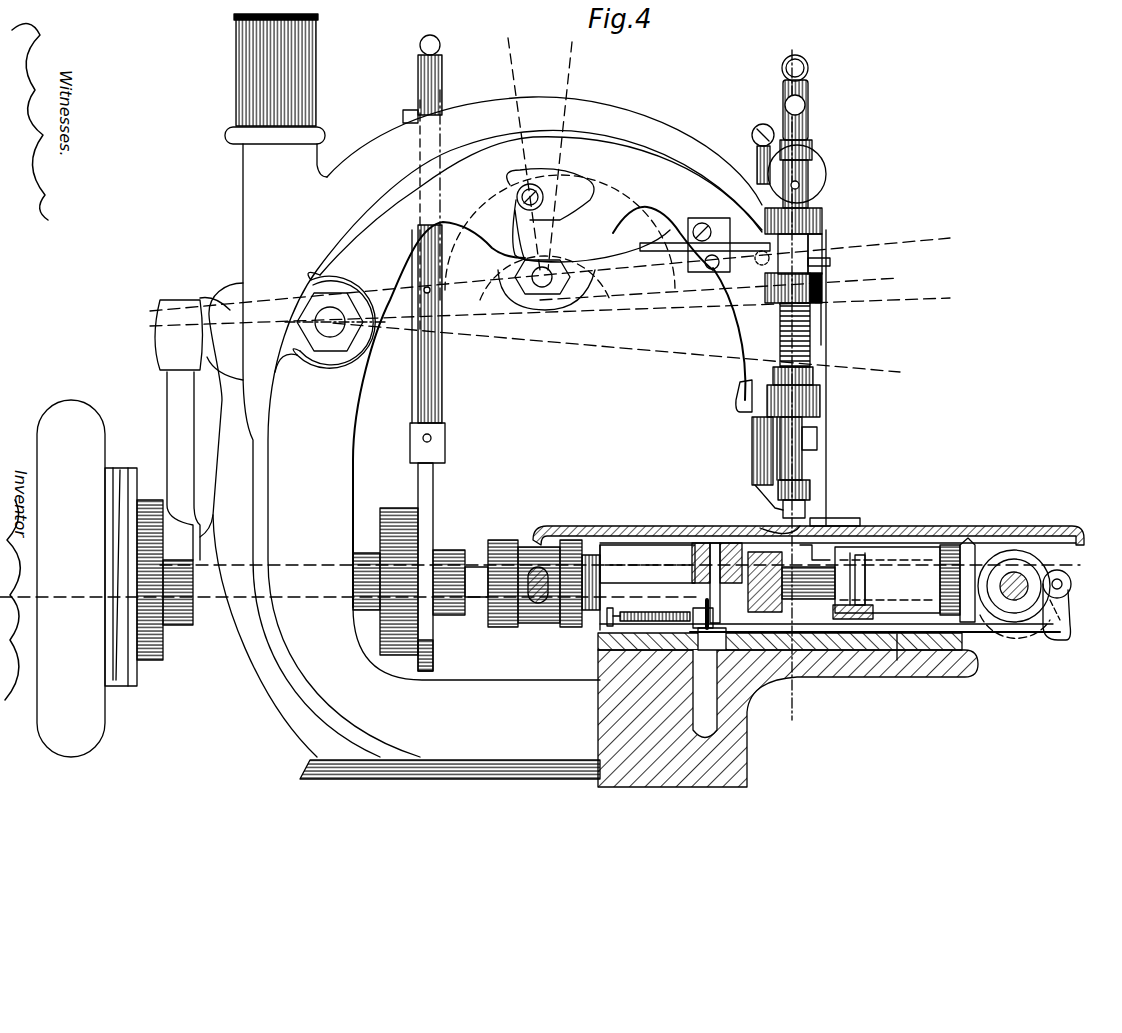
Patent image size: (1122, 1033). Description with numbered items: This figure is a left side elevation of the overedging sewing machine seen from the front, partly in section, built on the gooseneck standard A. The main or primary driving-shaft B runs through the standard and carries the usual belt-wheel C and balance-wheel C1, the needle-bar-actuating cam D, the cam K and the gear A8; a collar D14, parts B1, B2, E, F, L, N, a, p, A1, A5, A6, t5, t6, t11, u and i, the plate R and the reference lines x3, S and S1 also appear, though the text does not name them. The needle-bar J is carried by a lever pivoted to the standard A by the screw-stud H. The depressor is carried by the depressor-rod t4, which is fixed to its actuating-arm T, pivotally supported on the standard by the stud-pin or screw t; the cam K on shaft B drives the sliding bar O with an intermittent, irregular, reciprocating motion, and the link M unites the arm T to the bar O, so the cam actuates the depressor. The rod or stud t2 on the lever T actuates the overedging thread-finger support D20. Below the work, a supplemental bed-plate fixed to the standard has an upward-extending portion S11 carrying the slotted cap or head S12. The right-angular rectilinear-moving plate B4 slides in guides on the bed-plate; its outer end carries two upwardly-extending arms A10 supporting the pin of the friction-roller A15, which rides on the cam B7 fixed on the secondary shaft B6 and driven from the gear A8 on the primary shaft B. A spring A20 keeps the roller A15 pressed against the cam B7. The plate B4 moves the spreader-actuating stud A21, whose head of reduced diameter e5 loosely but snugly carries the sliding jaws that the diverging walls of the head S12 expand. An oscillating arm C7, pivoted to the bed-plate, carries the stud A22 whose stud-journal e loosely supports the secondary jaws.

The standard A is at (992, 512).
The screw-stud H is at (328, 340).
The balance-wheel C1 is at (71, 578).
The belt-wheel C is at (133, 688).
The needle-bar-actuating cam D is at (160, 655).
The lever E is at (167, 450).
The handle F is at (160, 338).
The reference line x3 is at (560, 278).
The reference line S is at (726, 285).
The reference line S1 is at (626, 352).
The rod top L is at (442, 72).
The link M is at (442, 378).
The sliding bar O is at (436, 482).
The cam K is at (390, 508).
The pinion N is at (456, 550).
The collar a is at (500, 625).
The collar p is at (545, 624).
The upward-extending portion S11 is at (605, 595).
The cloth plate R is at (930, 530).
The main or primary driving-shaft B is at (830, 592).
The slotted cap or head S12 is at (628, 540).
The head of reduced diameter e5 is at (708, 535).
The spring A20 is at (643, 614).
The spreader-actuating stud A21 is at (706, 592).
The stud A22 is at (872, 588).
The oscillating arm C7 is at (882, 613).
The stud-journal e is at (866, 560).
The overedging thread-finger support D20 is at (862, 526).
The needle guide t6 is at (812, 548).
The base plate A6 is at (965, 644).
The base A5 is at (955, 678).
The right-angular-shaped rectilinear-moving plate B4 is at (890, 640).
The secondary shaft B6 is at (1016, 600).
The cam B7 is at (1026, 600).
The gear A8 is at (1048, 566).
The friction-roller A15 is at (1072, 588).
The upwardly-extending arms A10 is at (1066, 626).
The needle-bar J is at (812, 93).
The depressor-rod t4 is at (756, 150).
The eccentric D14 is at (826, 164).
The collar B2 is at (826, 220).
The collar B1 is at (828, 296).
The bracket A1 is at (738, 400).
The needle bar i is at (778, 437).
The needle t11 is at (760, 494).
The thread guide t5 is at (622, 265).
The rod or stud t2 is at (547, 198).
The stud-pin or screw t is at (538, 292).
The actuating-arm T is at (680, 262).
The clamp block u is at (720, 228).